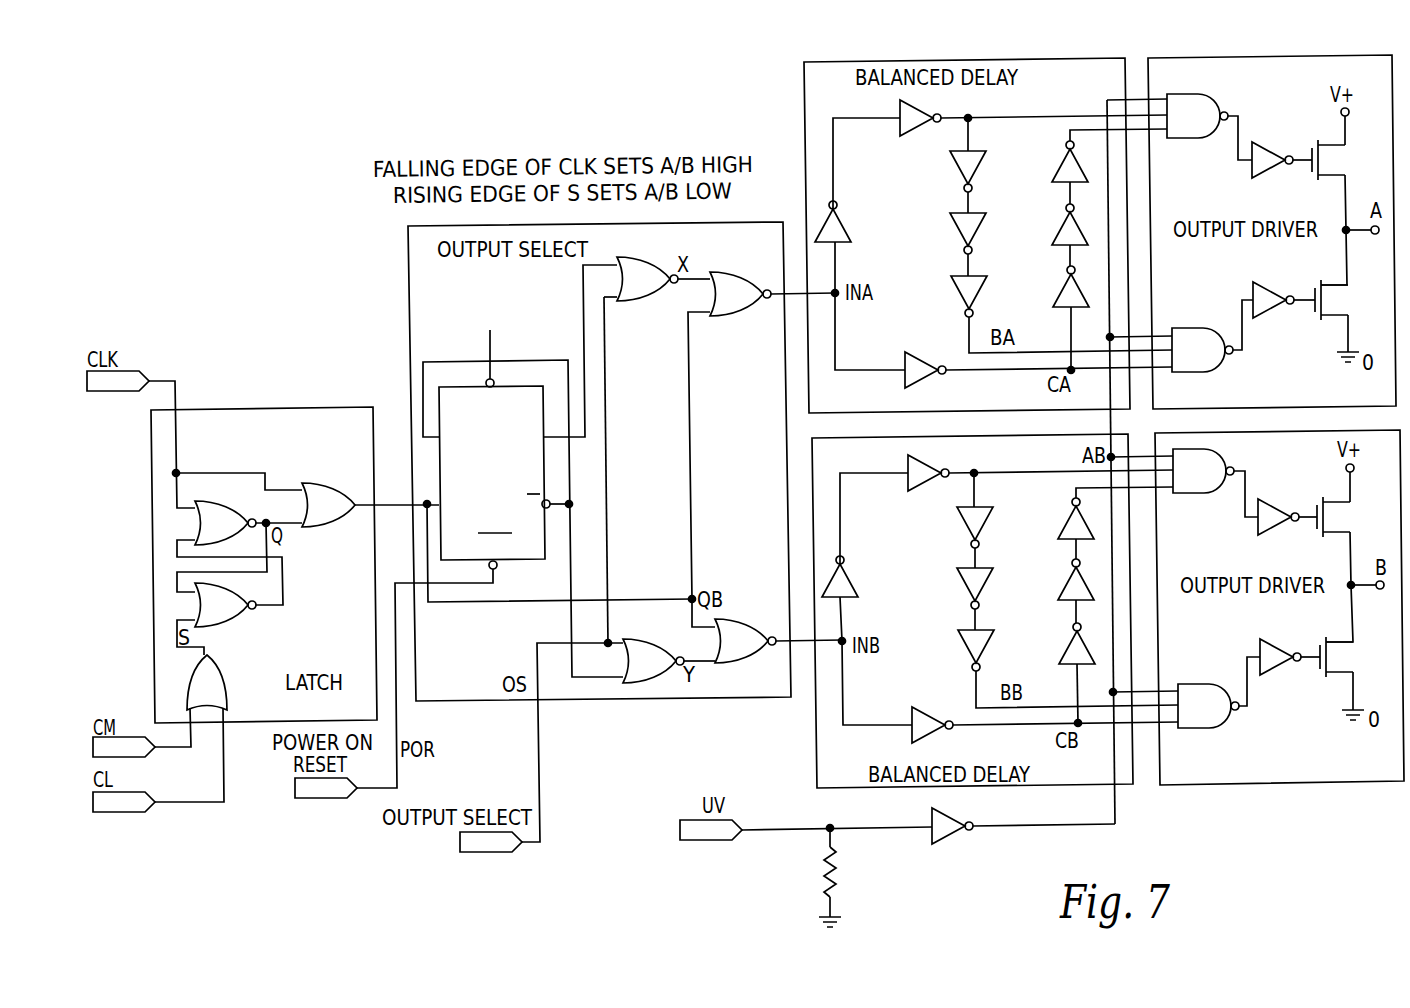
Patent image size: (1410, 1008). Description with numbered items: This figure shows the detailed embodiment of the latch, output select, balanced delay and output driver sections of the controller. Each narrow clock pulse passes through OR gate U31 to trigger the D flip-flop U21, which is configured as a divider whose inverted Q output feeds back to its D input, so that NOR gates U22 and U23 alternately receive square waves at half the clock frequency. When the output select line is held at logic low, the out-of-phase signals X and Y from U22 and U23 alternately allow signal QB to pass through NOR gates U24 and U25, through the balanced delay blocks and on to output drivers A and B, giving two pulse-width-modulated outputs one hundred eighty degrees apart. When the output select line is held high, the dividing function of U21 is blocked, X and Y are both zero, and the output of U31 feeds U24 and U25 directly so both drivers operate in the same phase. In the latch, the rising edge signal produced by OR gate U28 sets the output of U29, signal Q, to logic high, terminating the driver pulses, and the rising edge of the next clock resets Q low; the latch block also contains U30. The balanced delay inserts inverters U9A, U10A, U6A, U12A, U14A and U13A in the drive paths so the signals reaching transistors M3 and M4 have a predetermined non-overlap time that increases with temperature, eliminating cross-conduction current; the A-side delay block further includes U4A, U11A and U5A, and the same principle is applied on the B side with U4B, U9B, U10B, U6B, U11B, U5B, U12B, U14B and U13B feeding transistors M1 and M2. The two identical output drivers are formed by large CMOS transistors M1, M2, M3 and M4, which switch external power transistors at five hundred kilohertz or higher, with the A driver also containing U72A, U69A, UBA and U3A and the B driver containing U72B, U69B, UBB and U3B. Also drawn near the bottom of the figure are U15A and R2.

The latch gate U29 is at (225, 523).
The latch NOR gate U30 is at (225, 605).
The OR gate U31 is at (328, 505).
The OR gate U28 is at (207, 682).
The D flip-flop U21 is at (523, 471).
The NOR gate U22 is at (647, 279).
The NOR gate U23 is at (653, 661).
The NOR gate U24 is at (740, 294).
The NOR gate U25 is at (745, 641).
The inverter U4A is at (898, 115).
The inverter U9A is at (950, 171).
The inverter U10A is at (944, 233).
The inverter U6A is at (951, 296).
The inverter U11A is at (852, 235).
The inverter U5A is at (936, 377).
The inverter U12A is at (1046, 161).
The inverter U14A is at (1046, 224).
The inverter U13A is at (1048, 286).
The NAND gate U72A is at (1197, 116).
The inverter driver U69A is at (1278, 150).
The inverter driver UBA is at (1279, 290).
The NAND gate U3A is at (1202, 350).
The CMOS output drive transistor M4 is at (1338, 160).
The CMOS output drive transistor M3 is at (1340, 300).
The inverter U4B is at (906, 470).
The delay inverter U9B is at (957, 527).
The delay inverter U10B is at (951, 588).
The delay inverter U6B is at (958, 650).
The inverter U11B is at (859, 590).
The inverter U5B is at (944, 732).
The delay inverter U12B is at (1053, 518).
The delay inverter U14B is at (1053, 579).
The delay inverter U13B is at (1054, 643).
The NAND gate U72B is at (1203, 471).
The inverter driver U69B is at (1284, 507).
The inverter driver UBB is at (1286, 647).
The NAND gate U3B is at (1208, 706).
The CMOS output drive transistor M2 is at (1344, 517).
The CMOS output drive transistor M1 is at (1345, 657).
The undervoltage inverter U15A is at (968, 834).
The pull-down resistor R2 is at (816, 872).